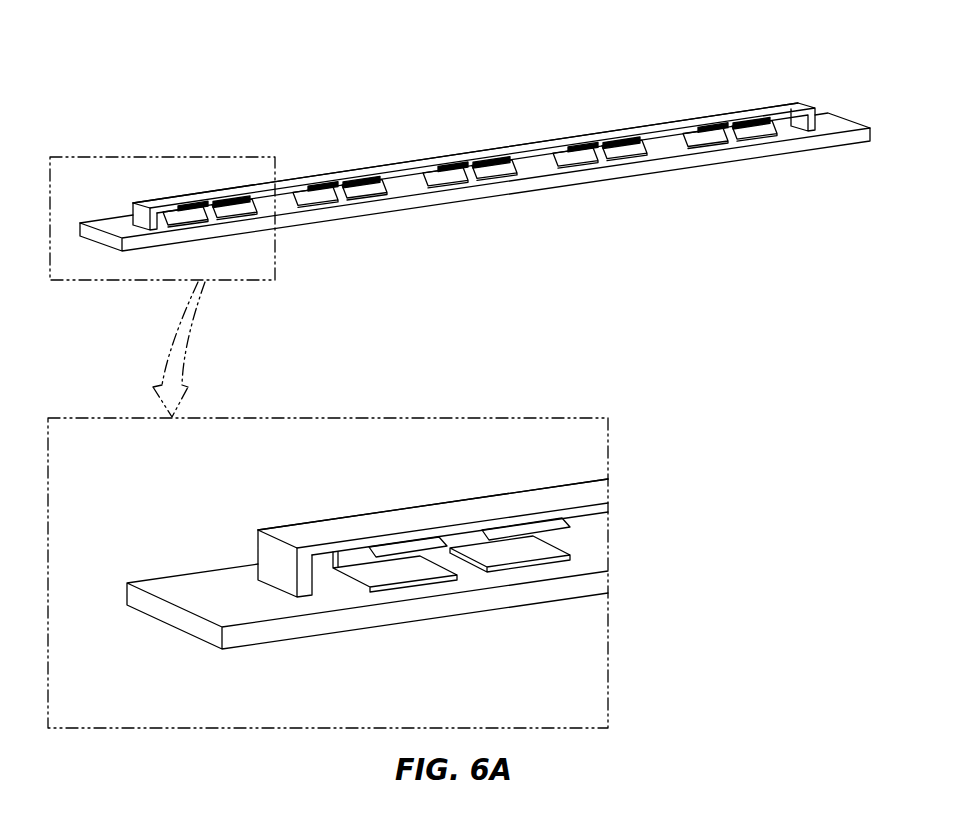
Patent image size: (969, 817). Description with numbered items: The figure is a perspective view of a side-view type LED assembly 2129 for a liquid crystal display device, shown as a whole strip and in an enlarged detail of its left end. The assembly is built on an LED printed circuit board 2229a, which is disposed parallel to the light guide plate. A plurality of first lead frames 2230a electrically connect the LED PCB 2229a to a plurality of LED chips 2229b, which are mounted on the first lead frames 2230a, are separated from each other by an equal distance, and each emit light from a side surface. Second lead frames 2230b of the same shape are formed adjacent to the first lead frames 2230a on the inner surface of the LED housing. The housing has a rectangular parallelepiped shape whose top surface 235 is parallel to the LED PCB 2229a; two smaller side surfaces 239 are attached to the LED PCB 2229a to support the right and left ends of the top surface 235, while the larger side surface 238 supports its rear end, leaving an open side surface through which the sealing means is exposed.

The LED assembly 2129 is at (530, 36).
The top surface 235 is at (430, 160).
The larger side surface 238 is at (328, 163).
The smaller side surface 239 is at (135, 207).
The LED printed circuit board 2229a is at (117, 225).
The LED chip 2229b is at (336, 197).
The first lead frame 2230a is at (300, 202).
The second lead frame 2230b is at (377, 192).